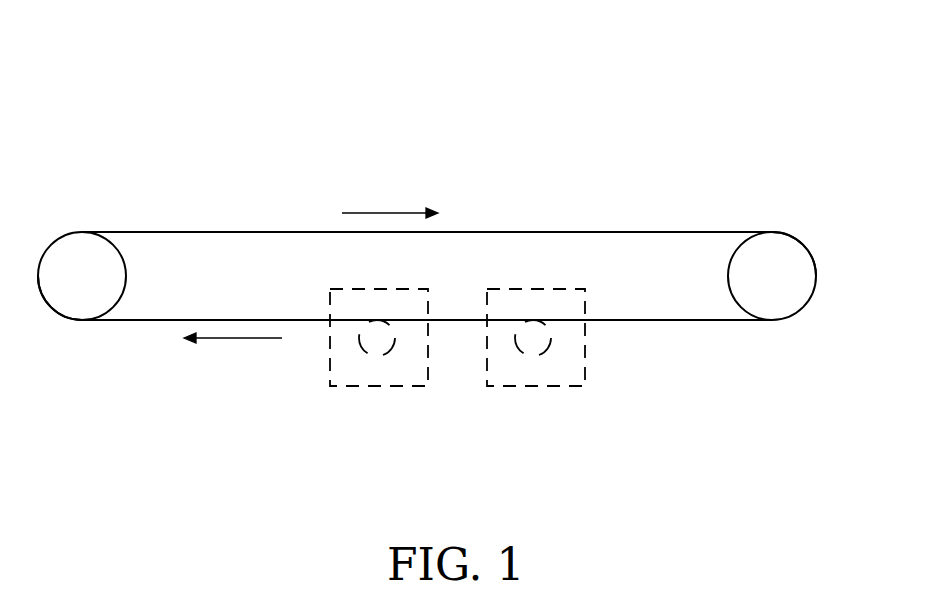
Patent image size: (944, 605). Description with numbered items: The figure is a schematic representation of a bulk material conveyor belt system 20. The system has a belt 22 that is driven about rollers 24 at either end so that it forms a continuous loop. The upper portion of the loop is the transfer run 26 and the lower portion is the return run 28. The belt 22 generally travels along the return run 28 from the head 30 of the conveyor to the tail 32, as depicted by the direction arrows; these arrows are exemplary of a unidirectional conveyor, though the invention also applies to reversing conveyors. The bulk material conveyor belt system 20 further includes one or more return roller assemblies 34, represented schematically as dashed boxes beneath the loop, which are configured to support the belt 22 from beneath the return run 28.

The bulk material conveyor belt system 20 is at (477, 93).
The belt 22 is at (222, 232).
The rollers 24 is at (77, 270).
The transfer run 26 is at (622, 230).
The return run 28 is at (680, 323).
The head 30 is at (812, 250).
The tail 32 is at (73, 322).
The return roller assemblies 34 is at (390, 388).